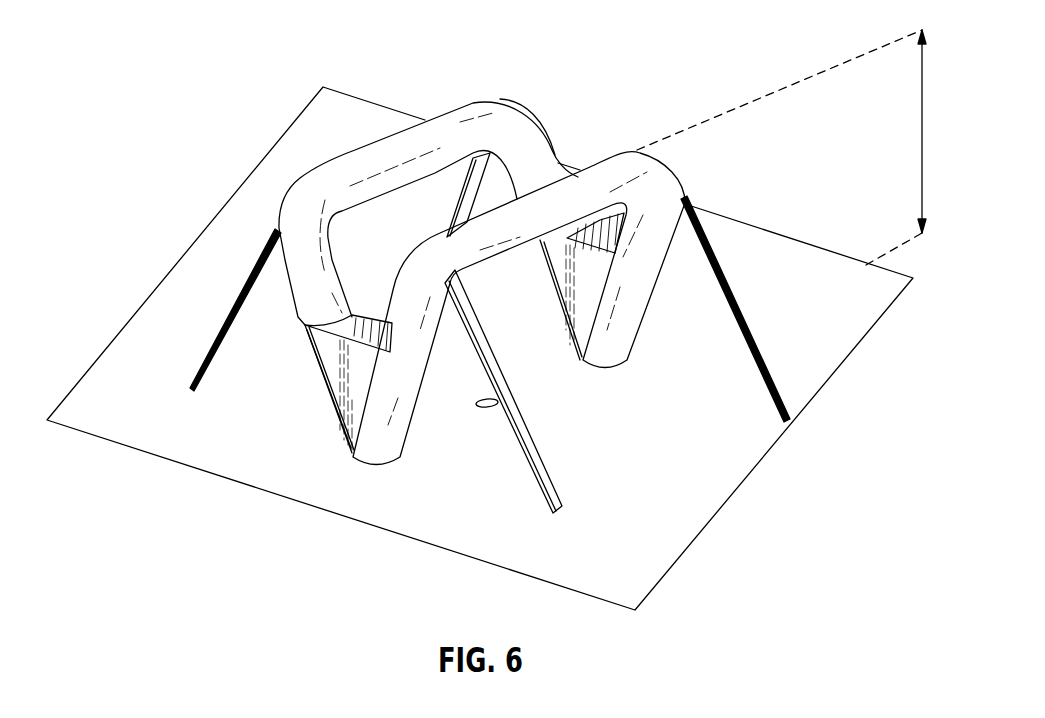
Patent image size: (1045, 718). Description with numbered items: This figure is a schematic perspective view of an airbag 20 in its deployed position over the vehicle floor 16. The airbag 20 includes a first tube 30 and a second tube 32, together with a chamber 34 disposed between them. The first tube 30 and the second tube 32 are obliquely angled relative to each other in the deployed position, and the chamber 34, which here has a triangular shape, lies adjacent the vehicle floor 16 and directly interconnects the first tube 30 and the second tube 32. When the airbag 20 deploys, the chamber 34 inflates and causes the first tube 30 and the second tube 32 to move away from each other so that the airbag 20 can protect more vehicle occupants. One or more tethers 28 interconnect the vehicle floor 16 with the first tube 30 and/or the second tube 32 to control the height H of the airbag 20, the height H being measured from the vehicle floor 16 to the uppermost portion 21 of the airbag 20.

The vehicle floor 16 is at (838, 296).
The airbag 20 is at (672, 162).
The uppermost portion 21 is at (553, 147).
The tethers 28 is at (452, 217).
The first tube 30 is at (550, 297).
The second tube 32 is at (383, 142).
The chamber 34 is at (295, 380).
The height H is at (920, 108).